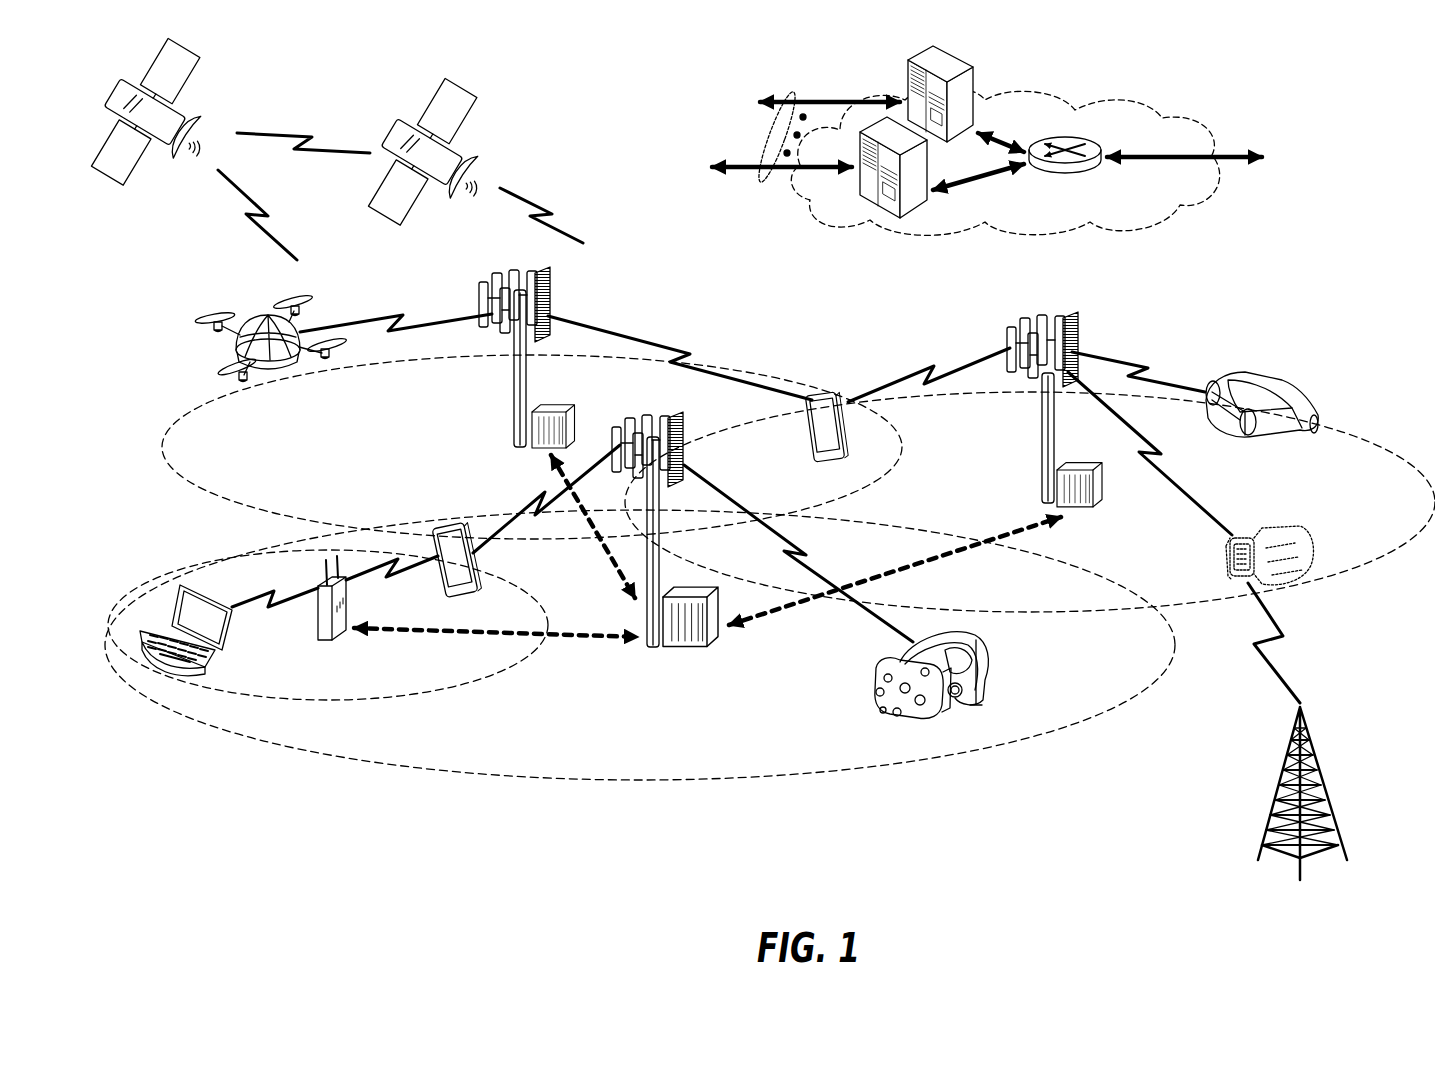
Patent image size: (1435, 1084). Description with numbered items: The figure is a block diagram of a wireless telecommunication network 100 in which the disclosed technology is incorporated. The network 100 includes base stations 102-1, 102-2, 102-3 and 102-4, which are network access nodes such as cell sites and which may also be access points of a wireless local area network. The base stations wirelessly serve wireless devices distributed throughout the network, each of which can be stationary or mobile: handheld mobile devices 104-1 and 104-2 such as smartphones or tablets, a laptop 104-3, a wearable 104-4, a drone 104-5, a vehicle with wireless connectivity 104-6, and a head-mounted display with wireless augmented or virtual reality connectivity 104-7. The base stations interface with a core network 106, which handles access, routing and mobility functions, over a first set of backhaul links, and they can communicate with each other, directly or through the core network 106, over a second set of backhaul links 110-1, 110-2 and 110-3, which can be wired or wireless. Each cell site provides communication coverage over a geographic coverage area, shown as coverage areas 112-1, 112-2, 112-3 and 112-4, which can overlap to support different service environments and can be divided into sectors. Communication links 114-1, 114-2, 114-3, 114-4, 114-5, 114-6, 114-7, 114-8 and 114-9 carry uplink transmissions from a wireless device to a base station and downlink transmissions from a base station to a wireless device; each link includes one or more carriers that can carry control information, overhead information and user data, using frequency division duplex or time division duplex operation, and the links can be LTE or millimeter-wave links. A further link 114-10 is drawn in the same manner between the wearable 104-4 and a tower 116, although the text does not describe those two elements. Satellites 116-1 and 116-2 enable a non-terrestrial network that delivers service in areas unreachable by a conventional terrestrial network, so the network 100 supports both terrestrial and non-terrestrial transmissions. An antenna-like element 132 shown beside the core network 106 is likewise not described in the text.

The wireless telecommunication network 100 is at (1333, 133).
The base station 102-1 is at (646, 655).
The base station 102-2 is at (513, 398).
The base station 102-3 is at (1040, 430).
The base station 102-4 is at (318, 634).
The handheld mobile device 104-1 is at (515, 570).
The handheld mobile device 104-2 is at (805, 440).
The laptop 104-3 is at (165, 672).
The wearable 104-4 is at (1255, 532).
The drone 104-5 is at (278, 378).
The vehicle with wireless connectivity 104-6 is at (1285, 380).
The head-mounted display 104-7 is at (990, 657).
The core network 106 is at (1095, 222).
The backhaul link 110-1 is at (395, 638).
The backhaul link 110-2 is at (960, 545).
The backhaul link 110-3 is at (600, 563).
The geographic coverage area 112-1 is at (580, 780).
The geographic coverage area 112-2 is at (455, 690).
The geographic coverage area 112-3 is at (228, 502).
The geographic coverage area 112-4 is at (1345, 430).
The communication link 114-1 is at (818, 560).
The communication link 114-2 is at (540, 497).
The communication link 114-3 is at (266, 607).
The communication link 114-4 is at (390, 577).
The communication link 114-5 is at (395, 315).
The communication link 114-6 is at (930, 375).
The communication link 114-7 is at (690, 352).
The communication link 114-8 is at (1165, 472).
The communication link 114-9 is at (1140, 367).
The wireless link 114-10 is at (1285, 640).
The broadcast tower 116 is at (1320, 736).
The satellite 116-1 is at (200, 122).
The satellite 116-2 is at (465, 165).
The network antenna 132 is at (765, 183).